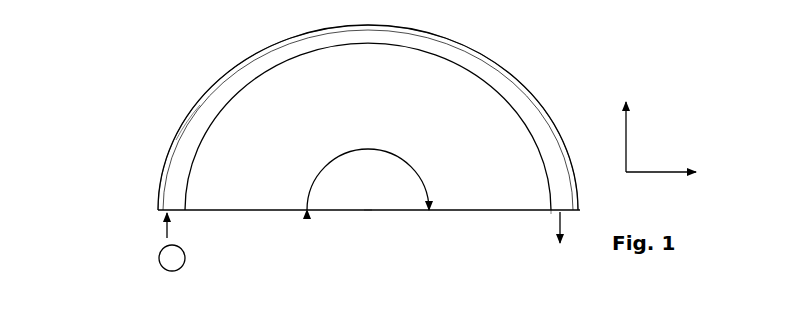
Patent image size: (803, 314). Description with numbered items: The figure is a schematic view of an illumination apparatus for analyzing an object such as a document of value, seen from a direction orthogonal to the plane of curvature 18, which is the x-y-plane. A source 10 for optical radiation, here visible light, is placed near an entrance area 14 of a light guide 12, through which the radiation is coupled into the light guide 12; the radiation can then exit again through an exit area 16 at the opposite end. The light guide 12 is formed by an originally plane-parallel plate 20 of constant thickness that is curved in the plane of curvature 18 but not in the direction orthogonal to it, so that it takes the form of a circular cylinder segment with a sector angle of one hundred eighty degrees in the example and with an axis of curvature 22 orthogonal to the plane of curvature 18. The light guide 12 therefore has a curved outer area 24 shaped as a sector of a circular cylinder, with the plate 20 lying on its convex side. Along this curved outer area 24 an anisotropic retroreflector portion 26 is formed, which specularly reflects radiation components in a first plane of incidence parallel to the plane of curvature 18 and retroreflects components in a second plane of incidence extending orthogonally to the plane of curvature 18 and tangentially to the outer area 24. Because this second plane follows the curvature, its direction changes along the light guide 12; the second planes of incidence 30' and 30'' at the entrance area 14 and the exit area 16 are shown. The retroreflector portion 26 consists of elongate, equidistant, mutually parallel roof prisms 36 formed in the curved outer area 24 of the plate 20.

The source 10 is at (183, 268).
The light guide 12 is at (368, 126).
The entrance area 14 is at (186, 217).
The exit area 16 is at (548, 216).
The plane of curvature 18 is at (672, 102).
The plate 20 is at (240, 78).
The axis of curvature 22 is at (366, 213).
The curved outer area 24 is at (499, 61).
The anisotropic retroreflector portion 26 is at (130, 72).
The second plane of incidence 30' is at (128, 208).
The second plane of incidence 30'' is at (612, 217).
The prisms 36 is at (180, 135).